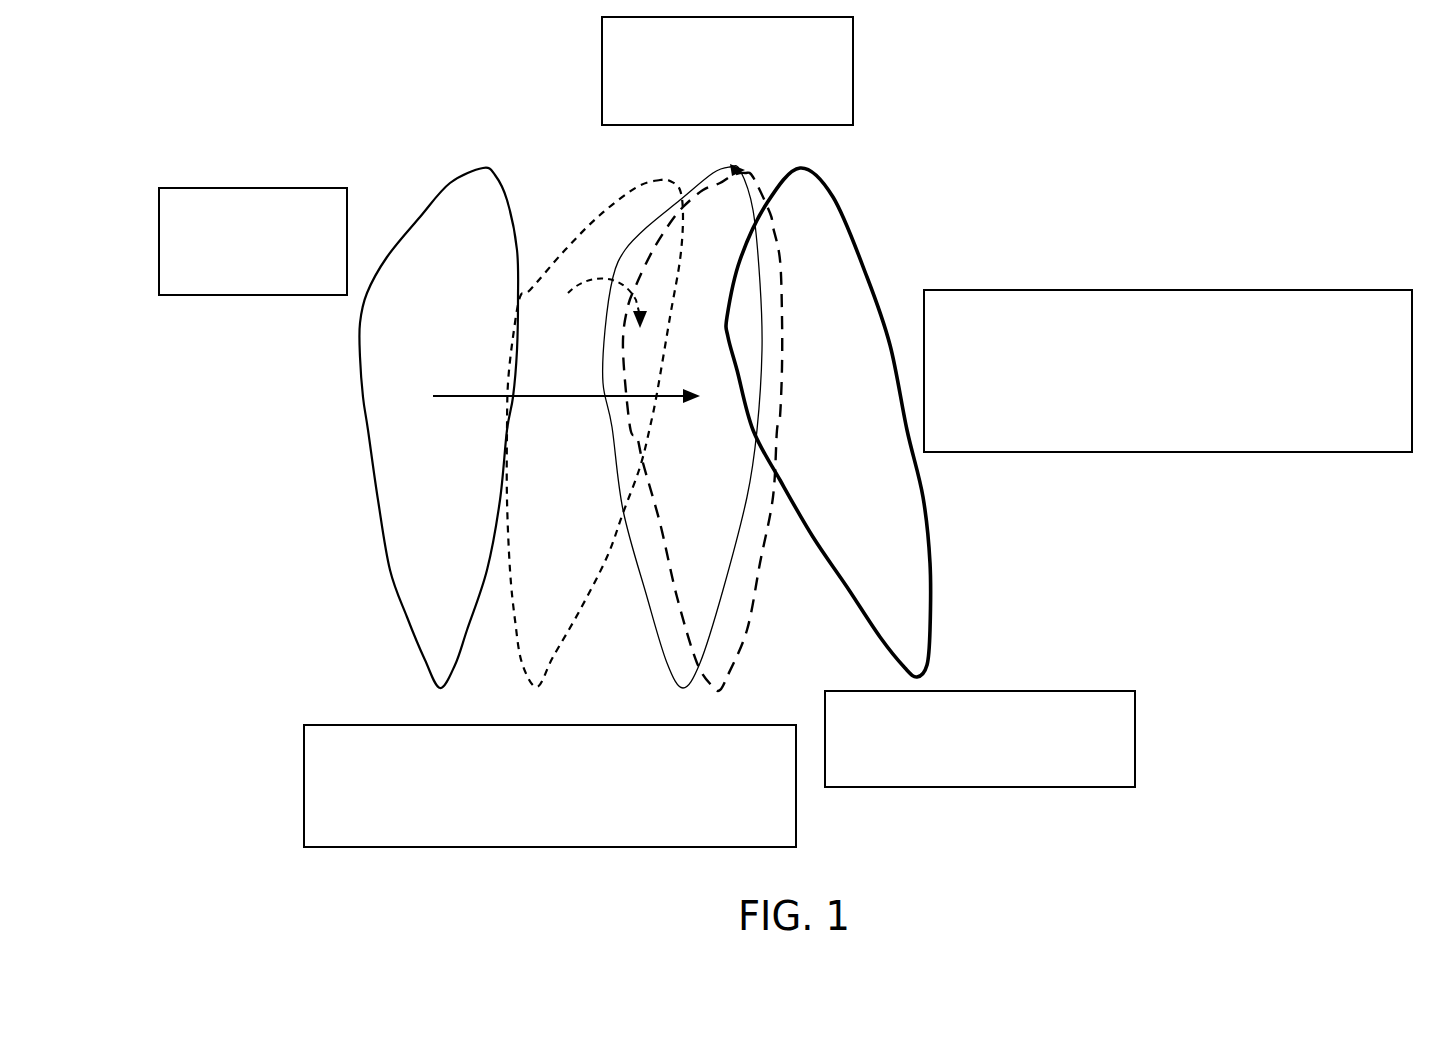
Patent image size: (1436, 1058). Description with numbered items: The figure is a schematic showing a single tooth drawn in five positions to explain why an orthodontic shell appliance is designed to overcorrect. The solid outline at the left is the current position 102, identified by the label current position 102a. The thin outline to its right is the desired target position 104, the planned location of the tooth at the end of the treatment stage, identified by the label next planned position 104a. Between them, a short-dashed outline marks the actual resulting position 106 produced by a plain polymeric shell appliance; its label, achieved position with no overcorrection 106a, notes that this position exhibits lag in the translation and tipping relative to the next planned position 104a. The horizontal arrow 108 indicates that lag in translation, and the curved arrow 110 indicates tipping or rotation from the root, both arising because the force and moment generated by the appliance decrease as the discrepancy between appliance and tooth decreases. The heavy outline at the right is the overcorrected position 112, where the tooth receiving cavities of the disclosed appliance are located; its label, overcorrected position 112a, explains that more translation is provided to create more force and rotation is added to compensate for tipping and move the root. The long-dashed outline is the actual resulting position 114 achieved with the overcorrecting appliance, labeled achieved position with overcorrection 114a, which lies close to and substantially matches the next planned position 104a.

The current position 102 is at (450, 187).
The current position label 102a is at (240, 187).
The desired target position 104 is at (703, 180).
The next planned position label 104a is at (853, 72).
The actual resulting position 106 is at (560, 247).
The achieved position with no overcorrection label 106a is at (304, 787).
The arrow 108 is at (493, 400).
The arrow 110 is at (616, 278).
The overcorrected position 112 is at (867, 260).
The overcorrected position label 112a is at (1325, 290).
The actual resulting position 114 is at (777, 228).
The achieved position with overcorrection label 114a is at (1135, 740).